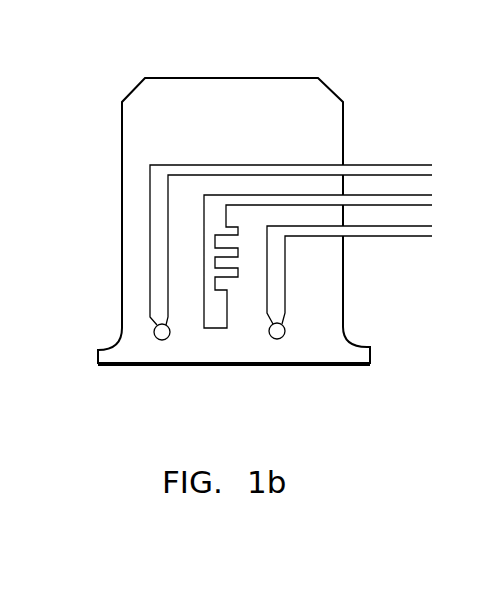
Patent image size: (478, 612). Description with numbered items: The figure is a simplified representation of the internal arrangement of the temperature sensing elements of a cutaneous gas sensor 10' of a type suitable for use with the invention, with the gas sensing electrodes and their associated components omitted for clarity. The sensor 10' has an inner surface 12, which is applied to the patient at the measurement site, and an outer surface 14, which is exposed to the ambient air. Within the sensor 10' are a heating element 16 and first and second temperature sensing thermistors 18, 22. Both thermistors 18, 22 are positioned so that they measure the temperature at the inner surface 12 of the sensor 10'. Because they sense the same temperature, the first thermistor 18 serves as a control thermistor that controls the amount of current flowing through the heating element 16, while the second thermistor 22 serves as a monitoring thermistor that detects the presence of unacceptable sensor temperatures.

The cutaneous gas sensor 10' is at (380, 71).
The inner surface 12 is at (222, 366).
The outer surface 14 is at (183, 78).
The heating element 16 is at (238, 280).
The first temperature sensing thermistor 18 is at (283, 337).
The second temperature sensing thermistor 22 is at (168, 338).